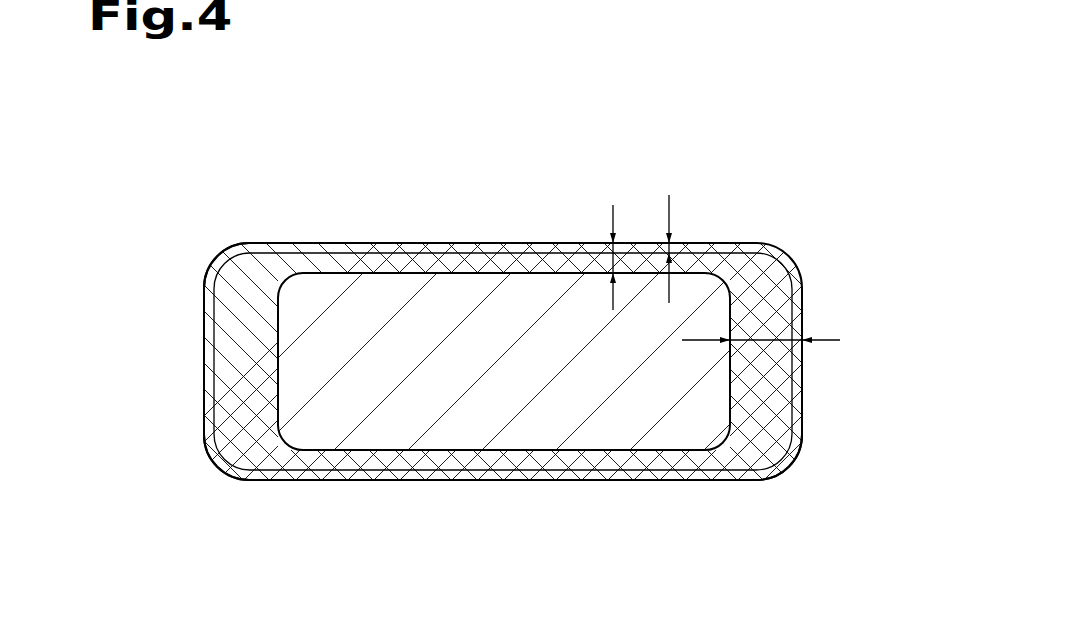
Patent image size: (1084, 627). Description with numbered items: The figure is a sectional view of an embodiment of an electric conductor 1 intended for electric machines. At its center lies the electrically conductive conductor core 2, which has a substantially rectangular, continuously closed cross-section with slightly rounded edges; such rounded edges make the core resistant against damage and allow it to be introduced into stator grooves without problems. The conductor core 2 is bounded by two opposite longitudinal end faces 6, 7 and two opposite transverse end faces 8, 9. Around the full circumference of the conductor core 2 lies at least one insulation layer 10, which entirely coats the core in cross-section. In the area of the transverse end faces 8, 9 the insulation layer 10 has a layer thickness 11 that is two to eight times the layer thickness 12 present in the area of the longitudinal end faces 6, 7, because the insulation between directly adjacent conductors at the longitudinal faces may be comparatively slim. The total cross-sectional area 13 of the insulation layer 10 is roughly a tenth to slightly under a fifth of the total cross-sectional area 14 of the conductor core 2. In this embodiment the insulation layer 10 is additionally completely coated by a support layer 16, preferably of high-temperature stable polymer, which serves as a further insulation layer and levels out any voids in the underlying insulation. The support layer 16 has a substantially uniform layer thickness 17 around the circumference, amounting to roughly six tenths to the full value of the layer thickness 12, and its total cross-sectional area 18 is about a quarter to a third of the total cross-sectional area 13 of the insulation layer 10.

The electric conductor 1 is at (810, 141).
The conductor core 2 is at (512, 376).
The longitudinal end face 6 is at (445, 250).
The longitudinal end face 7 is at (567, 480).
The transverse end face 8 is at (215, 407).
The transverse end face 9 is at (737, 378).
The insulation layer 10 is at (245, 270).
The layer thickness 11 is at (760, 333).
The layer thickness 12 is at (588, 243).
The total cross-sectional area 13 is at (253, 432).
The total cross-sectional area 14 is at (409, 406).
The support layer 16 is at (732, 480).
The layer thickness 17 is at (672, 243).
The total cross-sectional area 18 is at (207, 360).